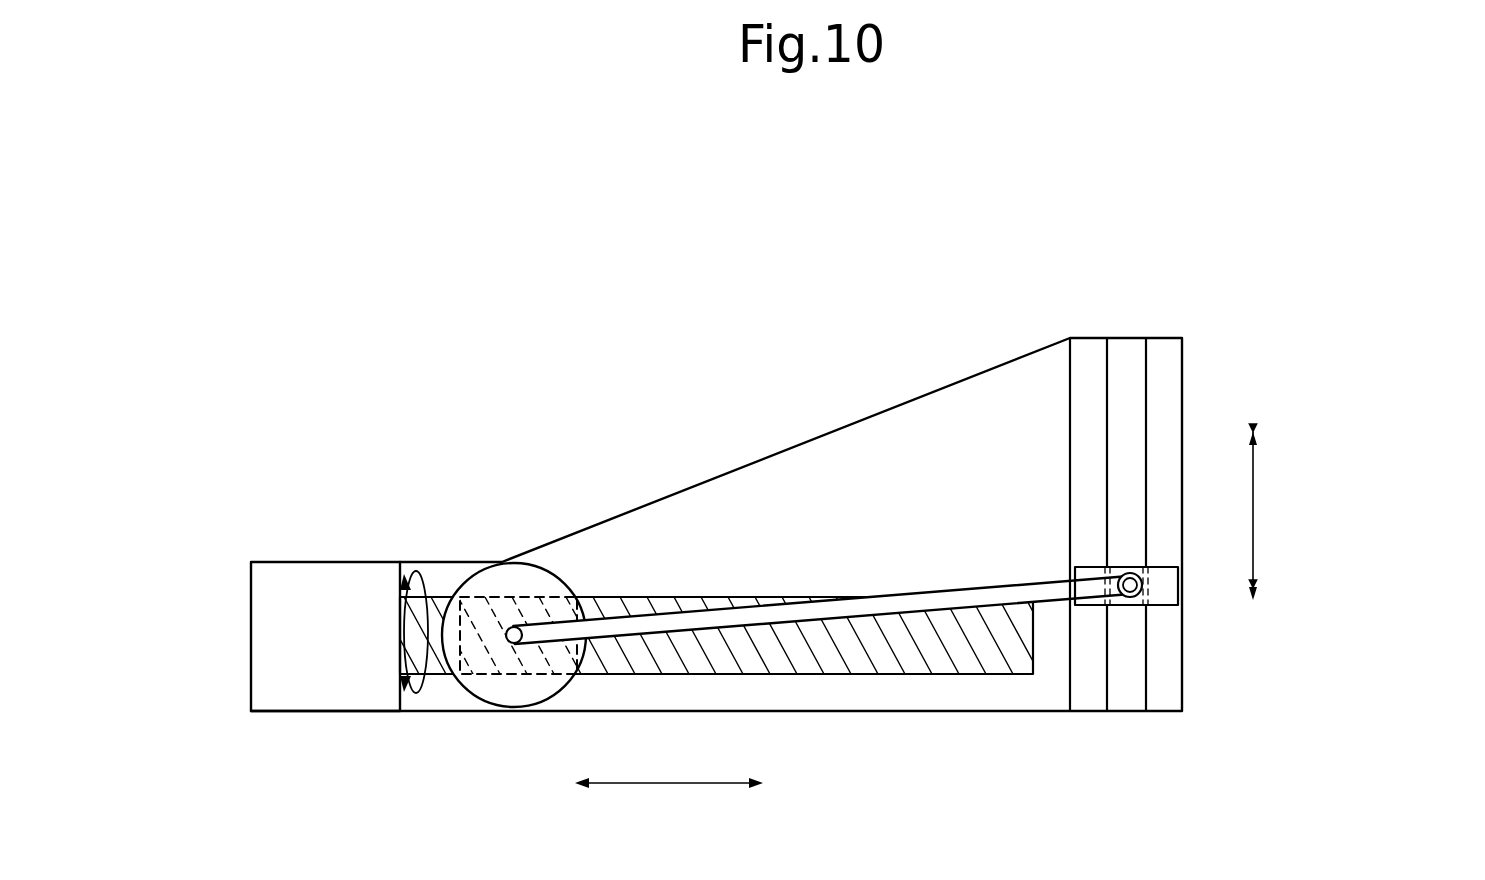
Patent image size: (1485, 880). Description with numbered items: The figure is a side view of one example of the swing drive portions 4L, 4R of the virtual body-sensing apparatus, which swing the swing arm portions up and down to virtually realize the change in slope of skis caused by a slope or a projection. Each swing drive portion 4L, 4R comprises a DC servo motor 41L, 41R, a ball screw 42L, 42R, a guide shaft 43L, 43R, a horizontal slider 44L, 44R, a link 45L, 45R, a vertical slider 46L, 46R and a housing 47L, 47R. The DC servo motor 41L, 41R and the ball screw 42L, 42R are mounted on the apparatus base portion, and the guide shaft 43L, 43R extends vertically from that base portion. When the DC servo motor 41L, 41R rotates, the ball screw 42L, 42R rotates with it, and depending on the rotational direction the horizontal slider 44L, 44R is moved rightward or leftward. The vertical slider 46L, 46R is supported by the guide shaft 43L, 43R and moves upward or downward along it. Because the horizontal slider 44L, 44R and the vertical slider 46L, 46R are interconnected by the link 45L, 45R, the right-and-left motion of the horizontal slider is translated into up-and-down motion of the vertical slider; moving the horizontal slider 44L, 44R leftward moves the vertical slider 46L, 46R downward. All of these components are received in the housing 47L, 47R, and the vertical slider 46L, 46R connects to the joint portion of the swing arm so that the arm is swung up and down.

The swing drive portion 4L is at (828, 514).
The swing drive portion 4R is at (650, 352).
The DC servo motor 41L is at (340, 685).
The DC servo motor 41R is at (277, 703).
The ball screw 42L is at (818, 556).
The ball screw 42R is at (797, 605).
The guide shaft 43L is at (1203, 473).
The guide shaft 43R is at (1122, 348).
The horizontal slider 44L is at (395, 581).
The horizontal slider 44R is at (502, 580).
The link 45L is at (719, 703).
The link 45R is at (1048, 603).
The vertical slider 46L is at (1275, 631).
The vertical slider 46R is at (1168, 590).
The housing 47L is at (716, 506).
The housing 47R is at (873, 432).